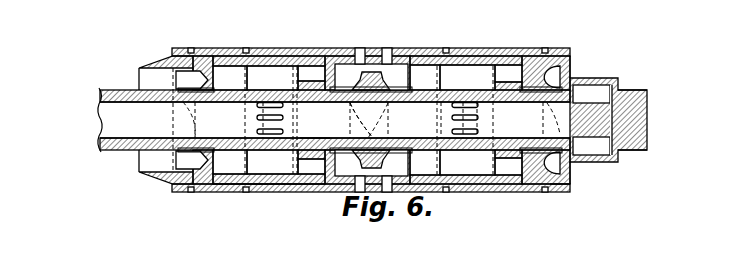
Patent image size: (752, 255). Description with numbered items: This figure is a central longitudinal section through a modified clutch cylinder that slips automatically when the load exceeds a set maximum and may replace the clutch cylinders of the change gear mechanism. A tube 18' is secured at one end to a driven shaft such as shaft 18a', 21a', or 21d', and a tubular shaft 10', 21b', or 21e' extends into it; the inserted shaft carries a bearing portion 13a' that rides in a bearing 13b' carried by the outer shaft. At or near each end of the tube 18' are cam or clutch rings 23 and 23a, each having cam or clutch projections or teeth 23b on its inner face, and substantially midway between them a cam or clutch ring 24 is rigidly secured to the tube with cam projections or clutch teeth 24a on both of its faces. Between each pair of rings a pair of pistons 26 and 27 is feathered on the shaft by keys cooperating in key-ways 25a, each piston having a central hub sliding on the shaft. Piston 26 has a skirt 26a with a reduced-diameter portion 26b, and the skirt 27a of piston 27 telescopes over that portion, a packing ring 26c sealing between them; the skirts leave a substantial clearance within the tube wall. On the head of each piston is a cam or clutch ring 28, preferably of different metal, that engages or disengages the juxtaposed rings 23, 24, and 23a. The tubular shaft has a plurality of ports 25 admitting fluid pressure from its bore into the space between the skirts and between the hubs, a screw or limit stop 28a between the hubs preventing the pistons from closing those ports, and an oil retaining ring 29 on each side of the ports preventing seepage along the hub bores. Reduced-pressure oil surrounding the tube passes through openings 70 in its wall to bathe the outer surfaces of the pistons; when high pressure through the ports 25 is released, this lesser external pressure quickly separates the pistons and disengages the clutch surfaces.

The shaft 10' is at (305, 129).
The bearing portion 13a' is at (620, 120).
The bearing 13b' is at (599, 75).
The tube 18' is at (273, 215).
The shaft 18a' is at (664, 93).
The shaft 21a' is at (661, 120).
The shaft 21b' is at (306, 137).
The shaft 21d' is at (665, 135).
The shaft 21e' is at (308, 164).
The cam or clutch ring 23 is at (557, 177).
The cam or clutch ring 23a is at (157, 66).
The cam or clutch projections or teeth 23b is at (193, 161).
The cam or clutch ring 24 is at (378, 173).
The cam projections or clutch teeth 24a is at (391, 172).
The ports 25 is at (285, 106).
The key-ways 25a is at (227, 93).
The piston 26 is at (217, 80).
The skirt 26a is at (233, 184).
The reduced-diameter skirt portion 26b is at (265, 178).
The packing ring 26c is at (292, 179).
The piston 27 is at (330, 73).
The skirt 27a is at (308, 186).
The cam or clutch ring 28 is at (405, 178).
The limit stop 28a is at (371, 77).
The oil retaining ring 29 is at (304, 146).
The openings 70 is at (247, 49).